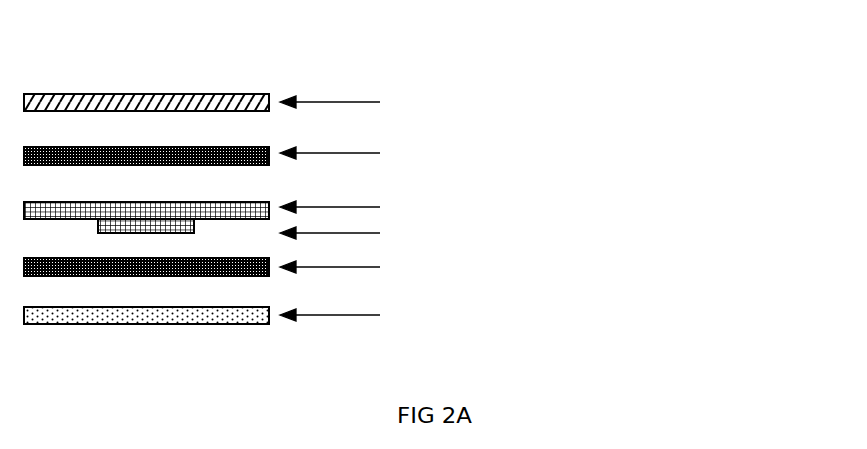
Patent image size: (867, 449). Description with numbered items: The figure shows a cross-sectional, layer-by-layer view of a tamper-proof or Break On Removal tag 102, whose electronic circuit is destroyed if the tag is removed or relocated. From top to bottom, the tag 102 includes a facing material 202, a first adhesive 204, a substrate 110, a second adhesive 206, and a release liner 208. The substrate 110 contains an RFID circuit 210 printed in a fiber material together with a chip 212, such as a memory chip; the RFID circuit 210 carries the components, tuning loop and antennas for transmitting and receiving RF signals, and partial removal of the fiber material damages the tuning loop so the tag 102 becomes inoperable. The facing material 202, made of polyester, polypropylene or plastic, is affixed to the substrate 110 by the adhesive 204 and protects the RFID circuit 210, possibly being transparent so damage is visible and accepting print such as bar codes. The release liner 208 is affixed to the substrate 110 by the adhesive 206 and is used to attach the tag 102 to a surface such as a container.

The tag 102 is at (553, 62).
The facing material 202 is at (760, 101).
The first adhesive 204 is at (535, 152).
The RFID circuit 210 is at (740, 203).
The chip 212 is at (470, 235).
The substrate 110 is at (792, 192).
The second adhesive 206 is at (513, 267).
The release liner 208 is at (697, 317).